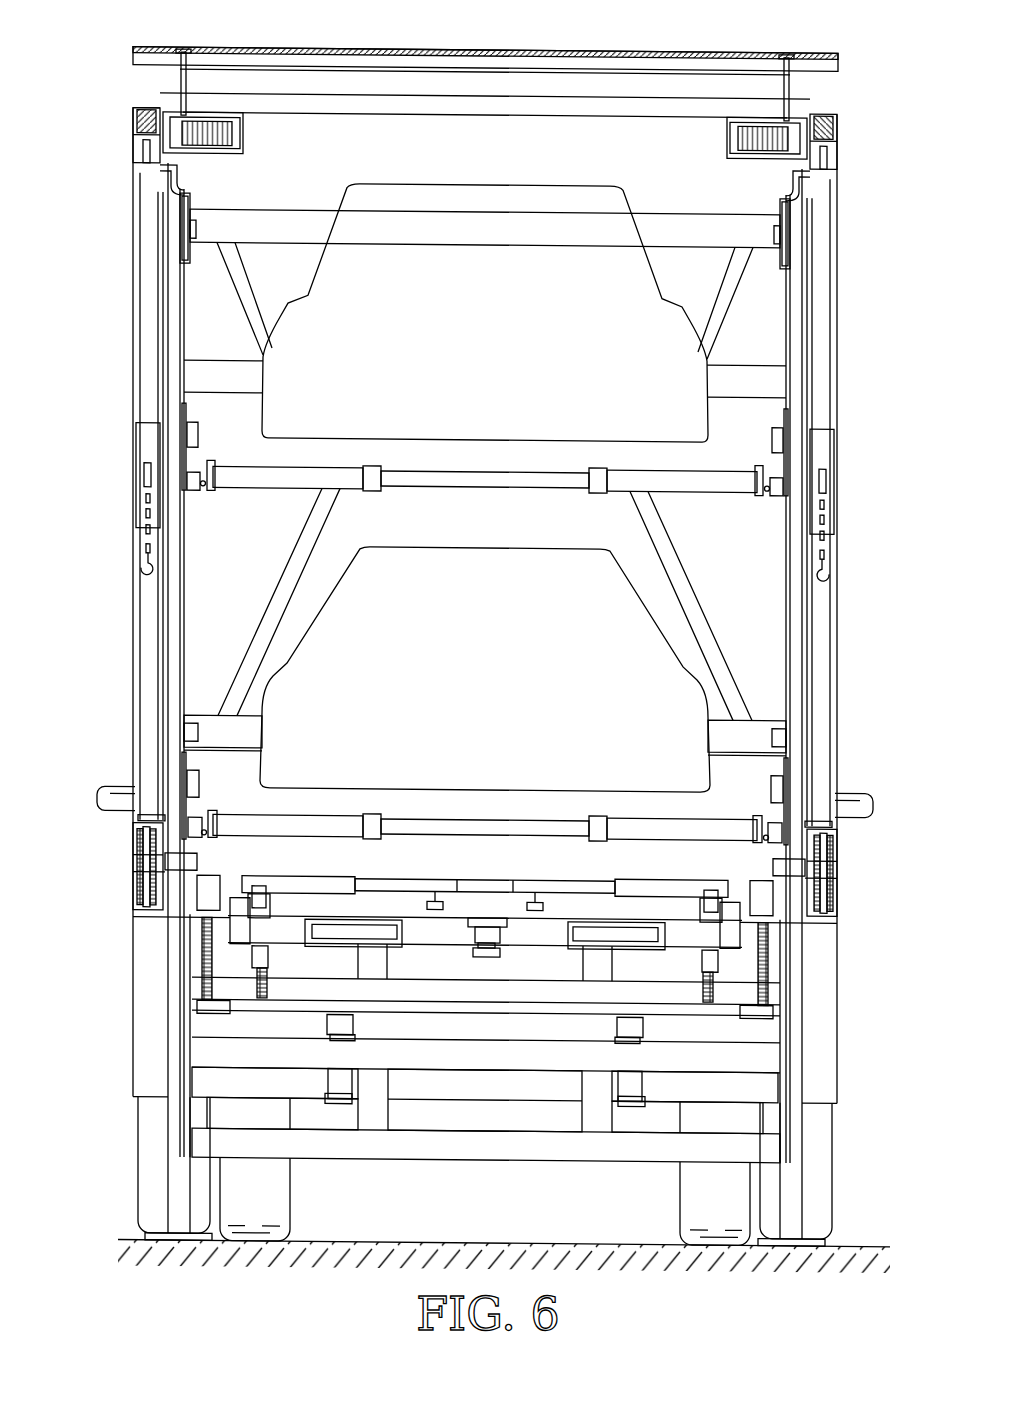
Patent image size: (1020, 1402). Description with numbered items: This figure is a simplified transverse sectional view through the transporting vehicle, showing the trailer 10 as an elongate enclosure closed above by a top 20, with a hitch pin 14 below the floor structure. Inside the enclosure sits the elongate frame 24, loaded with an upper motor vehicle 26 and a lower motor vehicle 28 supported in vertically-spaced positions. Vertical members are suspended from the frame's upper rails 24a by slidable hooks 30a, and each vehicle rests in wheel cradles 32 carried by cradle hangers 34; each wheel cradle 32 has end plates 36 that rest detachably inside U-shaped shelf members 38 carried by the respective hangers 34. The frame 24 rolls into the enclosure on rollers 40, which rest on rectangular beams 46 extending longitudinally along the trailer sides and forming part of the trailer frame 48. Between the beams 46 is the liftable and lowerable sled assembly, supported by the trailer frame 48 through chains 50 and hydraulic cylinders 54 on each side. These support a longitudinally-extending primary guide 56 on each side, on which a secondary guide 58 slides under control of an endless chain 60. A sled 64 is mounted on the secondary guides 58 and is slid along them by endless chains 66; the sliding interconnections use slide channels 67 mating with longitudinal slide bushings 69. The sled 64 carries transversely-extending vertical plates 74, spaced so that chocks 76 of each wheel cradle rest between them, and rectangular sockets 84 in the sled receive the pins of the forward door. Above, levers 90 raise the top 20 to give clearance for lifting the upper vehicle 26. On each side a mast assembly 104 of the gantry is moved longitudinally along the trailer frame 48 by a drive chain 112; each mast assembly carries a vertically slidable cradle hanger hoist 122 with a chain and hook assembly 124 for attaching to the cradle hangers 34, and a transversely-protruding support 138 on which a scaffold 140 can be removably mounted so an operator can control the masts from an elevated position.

The trailer 10 is at (862, 375).
The hitch pin 14 is at (500, 935).
The top 20 is at (505, 50).
The frame 24 is at (705, 255).
The upper rails 24a is at (180, 218).
The upper motor vehicle 26 is at (430, 218).
The lower motor vehicle 28 is at (512, 585).
The slidable hooks 30a is at (205, 208).
The wheel cradle 32 is at (480, 490).
The cradle hanger 34 is at (205, 495).
The end plates 36 is at (215, 470).
The U-shaped shelf members 38 is at (215, 490).
The rollers 40 is at (200, 900).
The rectangular beams 46 is at (205, 950).
The trailer frame 48 is at (145, 112).
The chains 50 is at (208, 975).
The hydraulic cylinders 54 is at (338, 1090).
The primary guide 56 is at (268, 1013).
The secondary guide 58 is at (197, 890).
The endless chain 60 is at (327, 1022).
The sled 64 is at (465, 880).
The endless chains 66 is at (300, 947).
The slide channels 67 is at (258, 890).
The slide bushings 69 is at (262, 908).
The vertical plates 74 is at (340, 878).
The chocks 76 is at (300, 468).
The rectangular sockets 84 is at (435, 902).
The levers 90 is at (186, 60).
The mast assembly 104 is at (140, 605).
The drive chain 112 is at (140, 890).
The cradle hanger hoist 122 is at (140, 430).
The chain and hook assembly 124 is at (145, 495).
The support 138 is at (133, 798).
The scaffold 140 is at (133, 860).